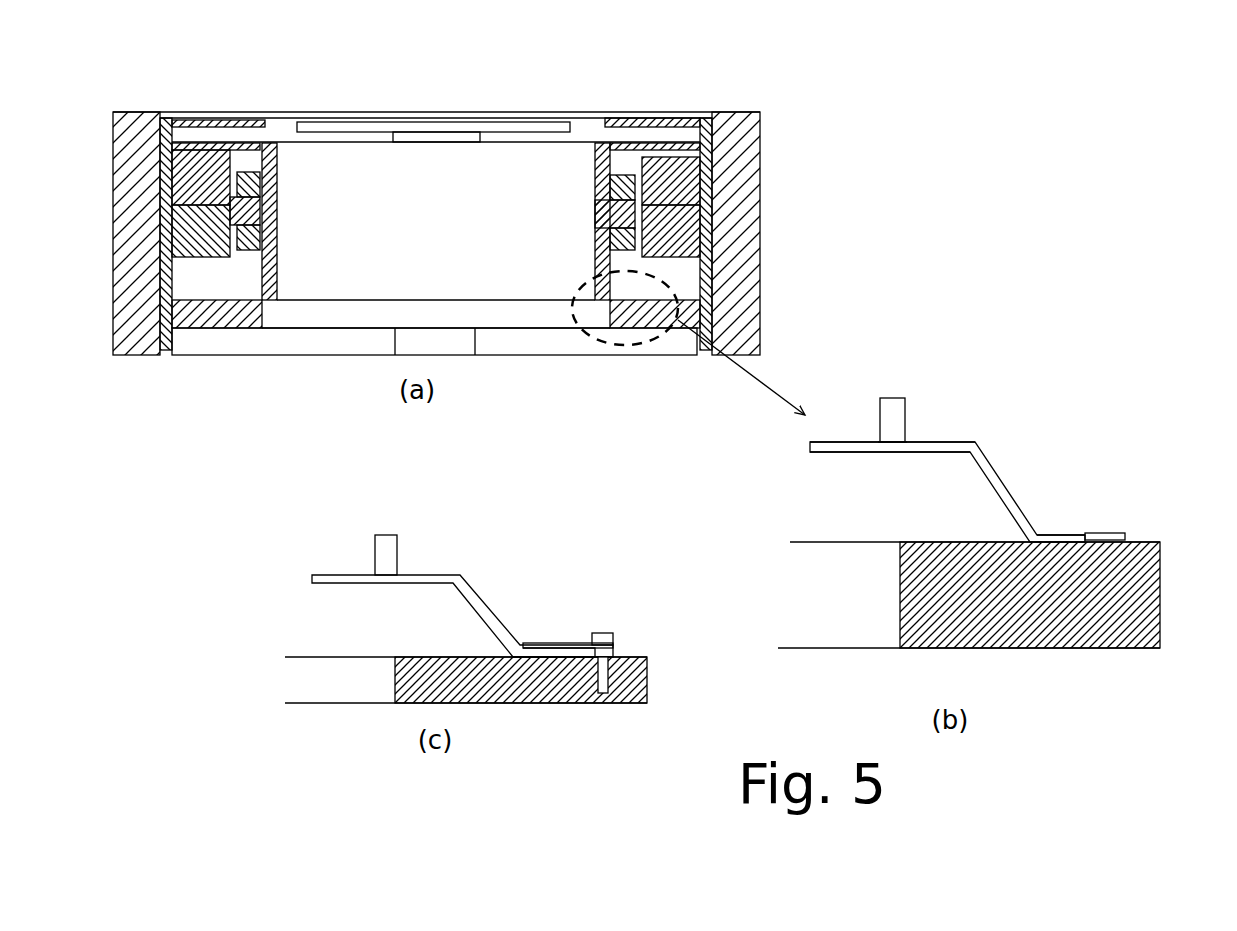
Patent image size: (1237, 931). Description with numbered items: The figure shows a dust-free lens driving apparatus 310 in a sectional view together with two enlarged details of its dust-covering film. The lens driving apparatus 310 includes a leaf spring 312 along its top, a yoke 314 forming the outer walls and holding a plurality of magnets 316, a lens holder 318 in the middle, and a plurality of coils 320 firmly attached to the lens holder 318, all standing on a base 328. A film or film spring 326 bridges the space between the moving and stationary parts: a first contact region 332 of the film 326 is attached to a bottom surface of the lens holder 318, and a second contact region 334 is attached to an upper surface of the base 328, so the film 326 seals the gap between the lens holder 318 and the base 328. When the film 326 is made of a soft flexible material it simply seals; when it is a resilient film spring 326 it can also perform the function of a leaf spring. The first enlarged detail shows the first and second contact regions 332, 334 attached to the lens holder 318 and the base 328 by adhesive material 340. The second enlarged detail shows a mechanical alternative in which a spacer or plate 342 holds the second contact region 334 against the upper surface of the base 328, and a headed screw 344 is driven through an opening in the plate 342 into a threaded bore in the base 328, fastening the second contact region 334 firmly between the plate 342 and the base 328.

The lens driving apparatus 310 is at (753, 53).
The leaf spring 312 is at (435, 140).
The yoke 314 is at (703, 182).
The magnets 316 is at (652, 222).
The lens holder 318 is at (607, 172).
The coils 320 is at (617, 185).
The film or film spring 326 is at (553, 302).
The base 328 is at (195, 320).
The first contact region 332 is at (820, 447).
The second contact region 334 is at (1108, 532).
The adhesive material 340 is at (907, 438).
The spacer or plate 342 is at (577, 642).
The headed screw 344 is at (605, 673).